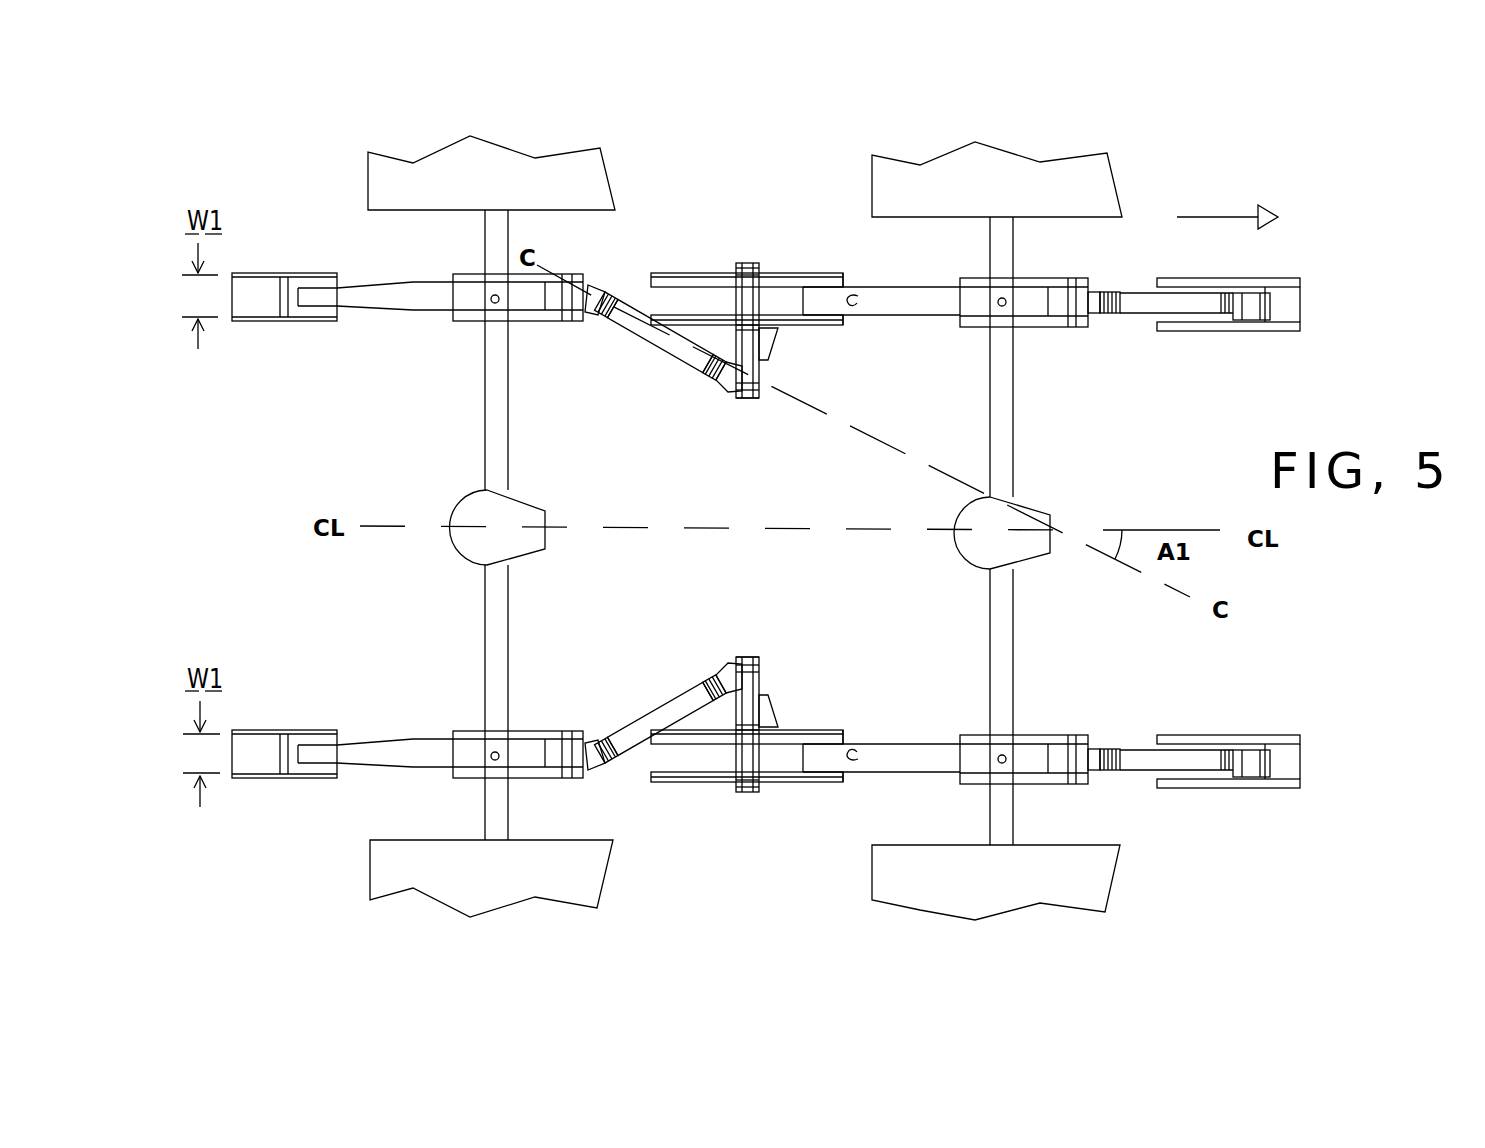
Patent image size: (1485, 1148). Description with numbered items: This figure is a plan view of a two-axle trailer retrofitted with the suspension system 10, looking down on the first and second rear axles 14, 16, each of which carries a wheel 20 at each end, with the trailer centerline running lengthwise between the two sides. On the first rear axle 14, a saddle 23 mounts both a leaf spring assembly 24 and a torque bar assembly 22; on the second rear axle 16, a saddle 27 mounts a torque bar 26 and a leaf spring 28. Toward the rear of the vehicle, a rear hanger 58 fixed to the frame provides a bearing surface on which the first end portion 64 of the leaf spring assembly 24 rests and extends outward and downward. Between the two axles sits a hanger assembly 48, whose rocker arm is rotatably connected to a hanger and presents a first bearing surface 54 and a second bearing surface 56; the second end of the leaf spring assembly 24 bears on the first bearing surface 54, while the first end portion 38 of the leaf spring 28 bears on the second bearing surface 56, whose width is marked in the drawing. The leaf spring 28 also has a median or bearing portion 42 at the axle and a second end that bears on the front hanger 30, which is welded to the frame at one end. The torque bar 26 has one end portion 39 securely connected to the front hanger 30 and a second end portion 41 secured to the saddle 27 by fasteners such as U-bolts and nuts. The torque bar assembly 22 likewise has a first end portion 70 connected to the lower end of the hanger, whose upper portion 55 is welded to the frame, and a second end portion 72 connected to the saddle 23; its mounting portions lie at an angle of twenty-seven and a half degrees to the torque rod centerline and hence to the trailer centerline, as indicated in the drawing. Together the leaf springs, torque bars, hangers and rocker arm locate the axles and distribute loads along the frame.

The suspension system 10 is at (1352, 383).
The first rear axle 14 is at (480, 625).
The second rear axle 16 is at (1017, 610).
The wheel 20 is at (615, 198).
The torque bar assembly 22 is at (661, 366).
The saddle 23 is at (469, 274).
The leaf spring assembly 24 is at (436, 321).
The torque bar 26 is at (1136, 328).
The saddle 27 is at (1053, 278).
The leaf spring 28 is at (879, 278).
The front hanger 30 is at (1282, 270).
The first end portion of the leaf spring 38 is at (858, 304).
The end portion of the torque bar 39 is at (1258, 306).
The second end portion of the torque bar 41 is at (1086, 304).
The median or bearing portion of the leaf spring 42 is at (1022, 304).
The hanger assembly 48 is at (809, 336).
The first bearing surface 54 is at (826, 272).
The upper portion of the hanger 55 is at (333, 317).
The second bearing surface 56 is at (677, 272).
The rear hanger 58 is at (307, 271).
The first end portion of the leaf spring assembly 64 is at (313, 295).
The first end portion of the torque bar assembly 70 is at (589, 318).
The second end portion of the torque bar assembly 72 is at (764, 388).